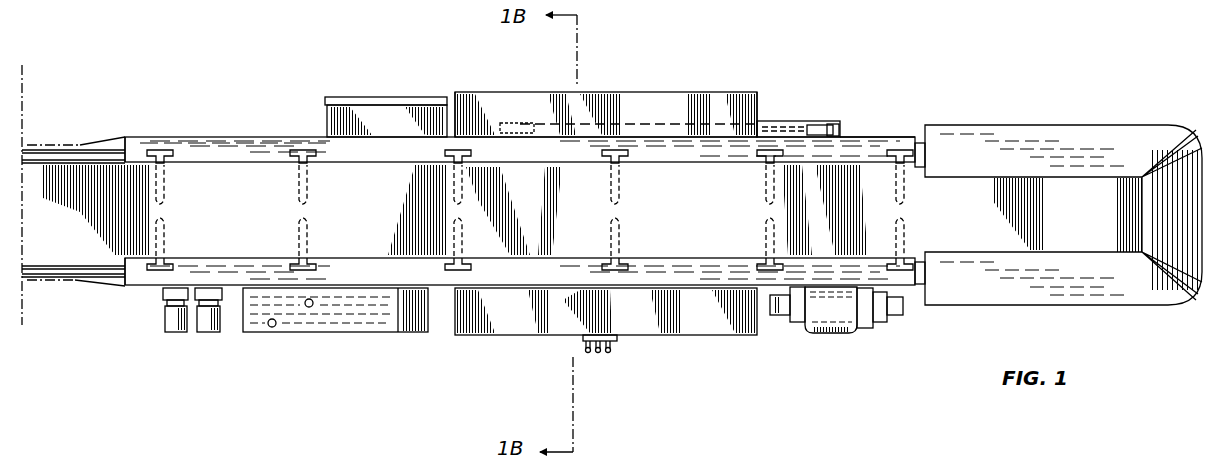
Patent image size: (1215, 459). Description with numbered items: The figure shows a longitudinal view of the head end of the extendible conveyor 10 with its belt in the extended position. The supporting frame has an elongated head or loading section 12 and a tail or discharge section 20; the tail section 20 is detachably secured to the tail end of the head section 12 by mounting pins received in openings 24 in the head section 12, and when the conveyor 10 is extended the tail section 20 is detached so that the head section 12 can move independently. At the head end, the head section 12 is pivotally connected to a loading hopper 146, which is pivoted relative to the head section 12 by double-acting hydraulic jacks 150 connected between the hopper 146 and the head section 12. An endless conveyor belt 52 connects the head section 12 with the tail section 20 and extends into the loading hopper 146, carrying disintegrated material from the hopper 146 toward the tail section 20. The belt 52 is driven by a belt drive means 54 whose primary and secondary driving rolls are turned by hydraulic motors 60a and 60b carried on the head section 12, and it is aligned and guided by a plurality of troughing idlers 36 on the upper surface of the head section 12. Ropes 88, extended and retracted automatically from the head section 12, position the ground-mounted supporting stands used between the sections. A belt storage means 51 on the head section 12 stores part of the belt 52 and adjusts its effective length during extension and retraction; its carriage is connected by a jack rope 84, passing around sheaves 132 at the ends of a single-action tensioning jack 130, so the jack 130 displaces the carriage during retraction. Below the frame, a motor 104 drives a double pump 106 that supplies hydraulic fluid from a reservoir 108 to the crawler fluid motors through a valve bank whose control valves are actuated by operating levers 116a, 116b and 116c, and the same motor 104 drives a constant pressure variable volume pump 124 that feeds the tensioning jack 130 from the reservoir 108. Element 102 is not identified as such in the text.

The extendible conveyor 10 is at (353, 90).
The head or loading section 12 is at (248, 138).
The tail or discharge section 20 is at (96, 283).
The openings 24 is at (138, 155).
The troughing idlers 36 is at (165, 170).
The belt storage means 51 is at (714, 337).
The endless conveyor belt 52 is at (868, 180).
The belt drive means 54 is at (206, 137).
The hydraulic motor 60a is at (179, 328).
The hydraulic motor 60b is at (219, 328).
The jack rope 84 is at (822, 125).
The ropes 88 is at (88, 150).
The housing 102 is at (668, 116).
The motor 104 is at (838, 331).
The double pump 106 is at (784, 317).
The reservoir 108 is at (393, 324).
The operating lever 116a is at (586, 350).
The operating lever 116b is at (599, 353).
The operating lever 116c is at (610, 352).
The constant pressure variable volume pump 124 is at (897, 318).
The tensioning jack 130 is at (718, 128).
The sheave 132 is at (522, 127).
The loading hopper 146 is at (1062, 133).
The double-acting hydraulic jacks 150 is at (926, 147).